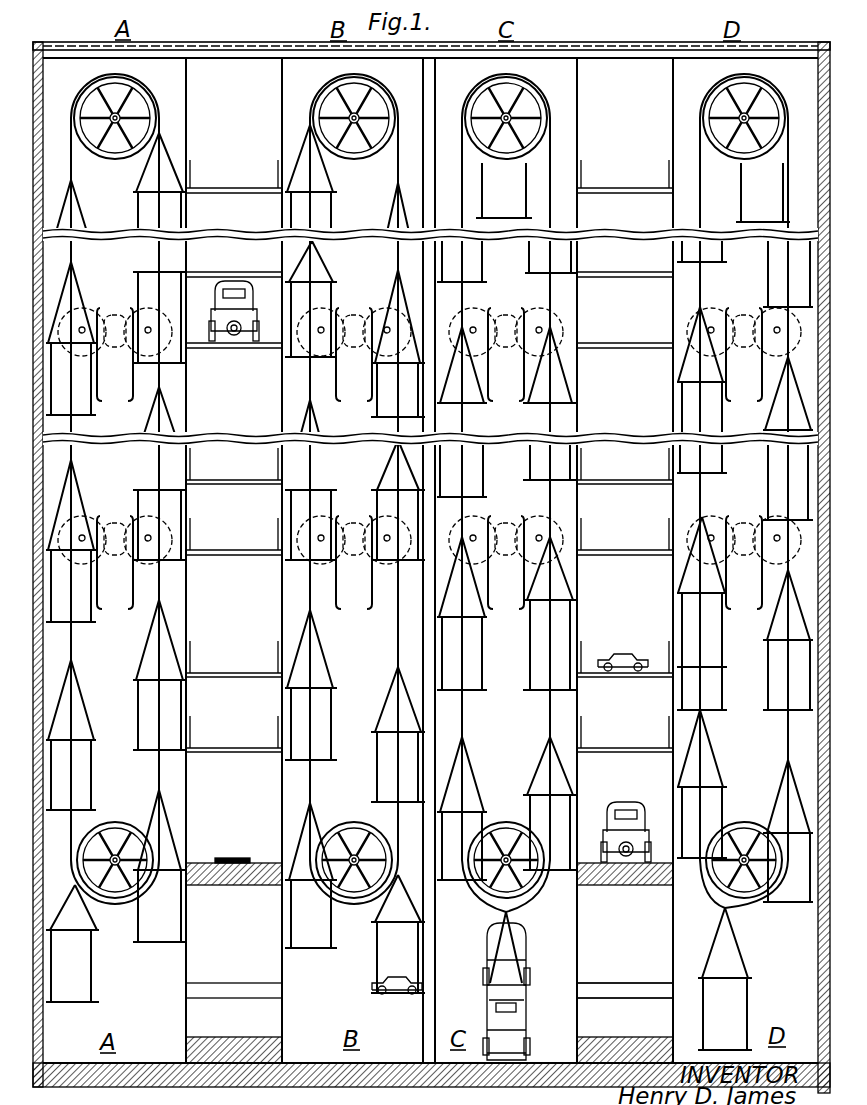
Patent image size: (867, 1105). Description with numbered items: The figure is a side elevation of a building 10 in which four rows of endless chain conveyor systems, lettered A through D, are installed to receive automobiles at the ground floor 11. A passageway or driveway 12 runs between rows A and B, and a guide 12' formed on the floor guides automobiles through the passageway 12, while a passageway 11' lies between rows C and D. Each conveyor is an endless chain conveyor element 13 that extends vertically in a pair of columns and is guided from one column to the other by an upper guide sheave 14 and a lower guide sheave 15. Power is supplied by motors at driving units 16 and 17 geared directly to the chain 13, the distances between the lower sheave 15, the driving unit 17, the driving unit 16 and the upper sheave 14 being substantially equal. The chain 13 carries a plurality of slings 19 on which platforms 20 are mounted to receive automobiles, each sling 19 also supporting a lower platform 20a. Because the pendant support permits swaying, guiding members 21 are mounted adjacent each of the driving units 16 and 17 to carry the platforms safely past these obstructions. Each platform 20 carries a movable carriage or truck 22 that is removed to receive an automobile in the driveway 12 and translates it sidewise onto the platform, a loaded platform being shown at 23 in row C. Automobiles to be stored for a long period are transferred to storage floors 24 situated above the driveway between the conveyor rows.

The building 10 is at (56, 34).
The ground floor 11 is at (429, 975).
The passageway 11' is at (625, 944).
The passageway or driveway 12 is at (429, 827).
The guide 12' is at (251, 840).
The endless chain conveyor element 13 is at (292, 168).
The upper guide sheave 14 is at (143, 102).
The lower guide sheave 15 is at (117, 892).
The driving unit 16 is at (125, 304).
The driving unit 17 is at (125, 514).
The sling 19 is at (133, 707).
The platform 20 is at (168, 880).
The lower platform 20a is at (160, 945).
The guiding member 21 is at (105, 610).
The movable carriage or truck 22 is at (628, 658).
The loaded platform 23 is at (567, 1020).
The storage floors 24 is at (231, 480).